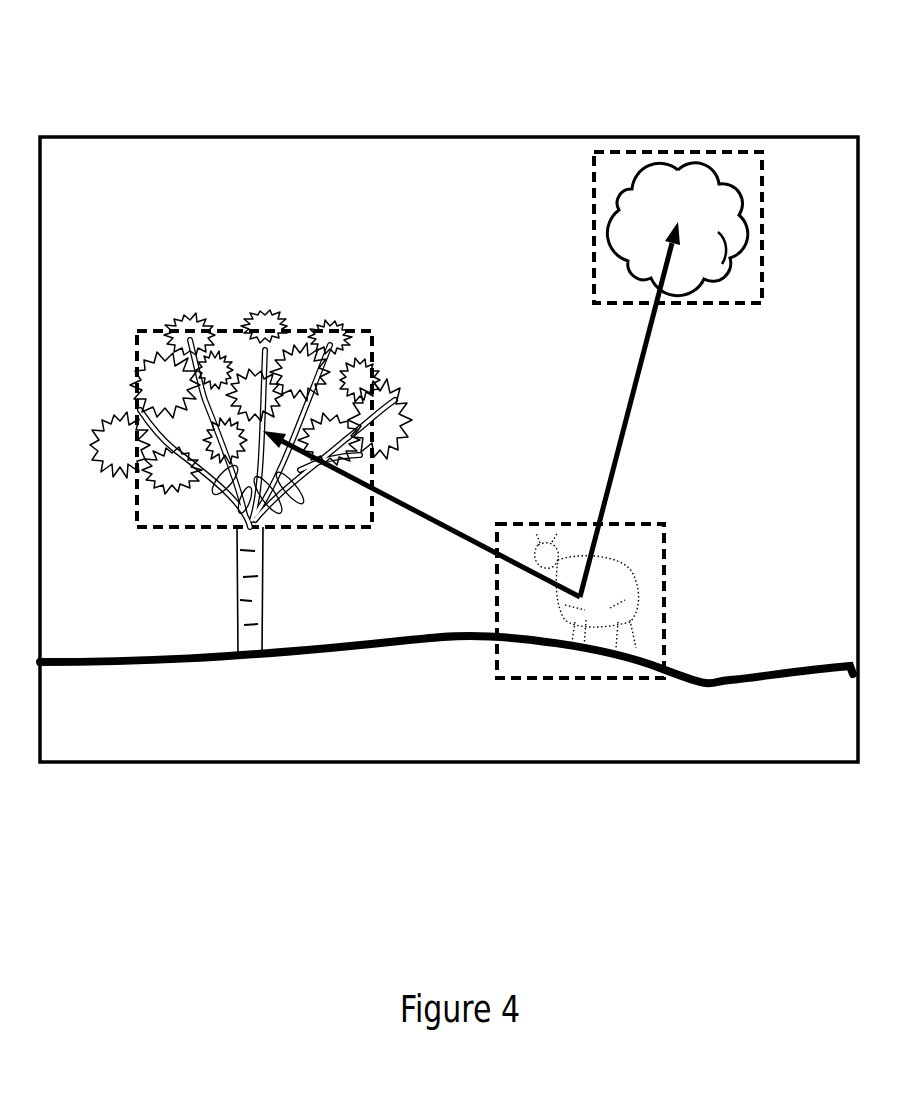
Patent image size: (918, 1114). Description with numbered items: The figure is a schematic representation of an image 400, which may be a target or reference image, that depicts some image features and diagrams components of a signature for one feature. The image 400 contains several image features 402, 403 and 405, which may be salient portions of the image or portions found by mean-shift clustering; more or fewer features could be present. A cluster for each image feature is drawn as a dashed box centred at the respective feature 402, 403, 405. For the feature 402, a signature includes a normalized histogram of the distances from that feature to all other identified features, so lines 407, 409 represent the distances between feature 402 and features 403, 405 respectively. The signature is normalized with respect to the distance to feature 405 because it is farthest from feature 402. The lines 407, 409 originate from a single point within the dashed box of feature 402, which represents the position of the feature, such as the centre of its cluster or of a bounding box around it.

The image 400 is at (165, 53).
The image feature 402 is at (580, 601).
The image feature 403 is at (251, 482).
The image feature 405 is at (678, 227).
The line 407 is at (421, 514).
The line 409 is at (630, 409).